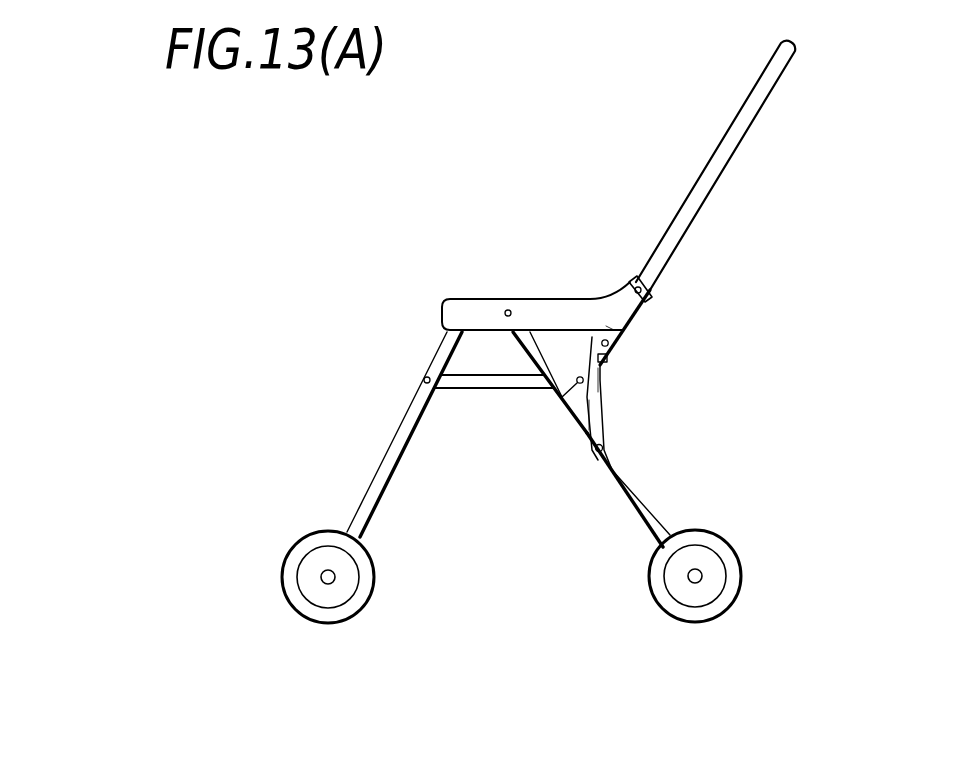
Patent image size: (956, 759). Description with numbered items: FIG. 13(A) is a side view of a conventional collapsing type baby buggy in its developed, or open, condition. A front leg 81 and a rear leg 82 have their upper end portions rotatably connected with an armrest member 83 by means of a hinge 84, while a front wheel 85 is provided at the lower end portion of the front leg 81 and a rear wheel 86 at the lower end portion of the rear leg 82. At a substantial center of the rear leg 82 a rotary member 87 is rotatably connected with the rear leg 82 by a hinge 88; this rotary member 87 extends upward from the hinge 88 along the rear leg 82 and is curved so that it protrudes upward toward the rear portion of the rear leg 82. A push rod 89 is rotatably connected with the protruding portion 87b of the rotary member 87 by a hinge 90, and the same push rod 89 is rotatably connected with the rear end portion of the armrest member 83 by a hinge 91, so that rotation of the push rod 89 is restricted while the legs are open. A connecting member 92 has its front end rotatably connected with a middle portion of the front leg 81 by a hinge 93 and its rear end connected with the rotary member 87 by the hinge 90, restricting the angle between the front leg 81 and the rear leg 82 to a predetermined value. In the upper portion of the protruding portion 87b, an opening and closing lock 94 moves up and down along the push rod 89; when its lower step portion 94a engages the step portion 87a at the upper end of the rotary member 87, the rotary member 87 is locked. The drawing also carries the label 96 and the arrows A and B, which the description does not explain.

The front leg 81 is at (390, 447).
The rear leg 82 is at (642, 517).
The armrest member 83 is at (470, 312).
The hinge 84 is at (508, 313).
The front wheel 85 is at (303, 552).
The rear wheel 86 is at (727, 557).
The rotary member 87 is at (592, 432).
The step portion 87a is at (606, 372).
The protruding portion 87b is at (583, 368).
The hinge 88 is at (604, 447).
The push rod 89 is at (717, 178).
The hinge 90 is at (577, 383).
The hinge 91 is at (651, 293).
The connecting member 92 is at (462, 389).
The hinge 93 is at (424, 380).
The opening and closing lock 94 is at (609, 341).
The step portion 94a is at (610, 356).
The seat hinge 96 is at (610, 330).
The rotation direction arrow A is at (603, 378).
The rotation direction arrow B is at (424, 533).